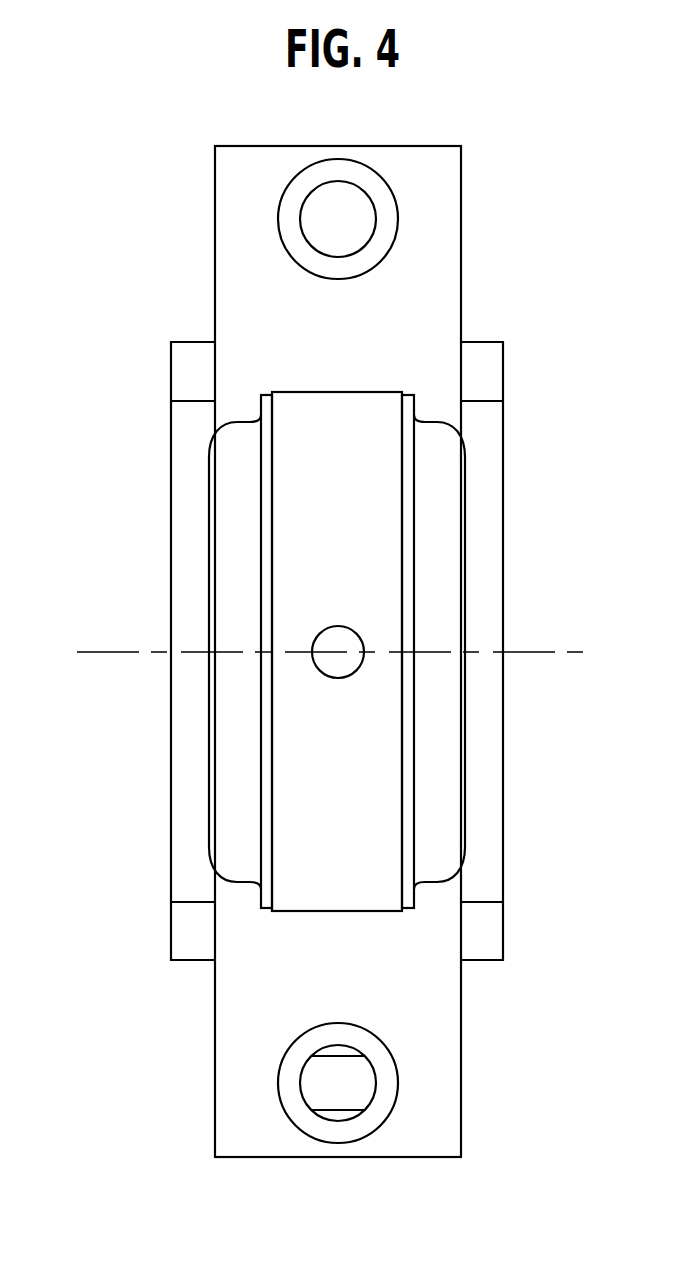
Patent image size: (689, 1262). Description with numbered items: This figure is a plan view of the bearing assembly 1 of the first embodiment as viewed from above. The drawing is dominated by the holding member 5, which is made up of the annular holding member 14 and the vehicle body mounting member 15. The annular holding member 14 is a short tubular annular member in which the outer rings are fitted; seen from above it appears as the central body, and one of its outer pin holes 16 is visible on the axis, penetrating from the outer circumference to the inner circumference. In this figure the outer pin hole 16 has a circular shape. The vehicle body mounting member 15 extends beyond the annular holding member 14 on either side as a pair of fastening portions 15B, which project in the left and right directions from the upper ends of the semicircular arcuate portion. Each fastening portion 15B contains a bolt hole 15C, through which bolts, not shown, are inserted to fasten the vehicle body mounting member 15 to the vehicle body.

The bearing assembly 1 is at (98, 190).
The holding member 5 is at (314, 651).
The annular holding member 14 is at (312, 536).
The vehicle body mounting member 15 is at (215, 315).
The fastening portions 15B is at (226, 260).
The bolt holes 15C is at (370, 195).
The outer pin holes 16 is at (356, 634).